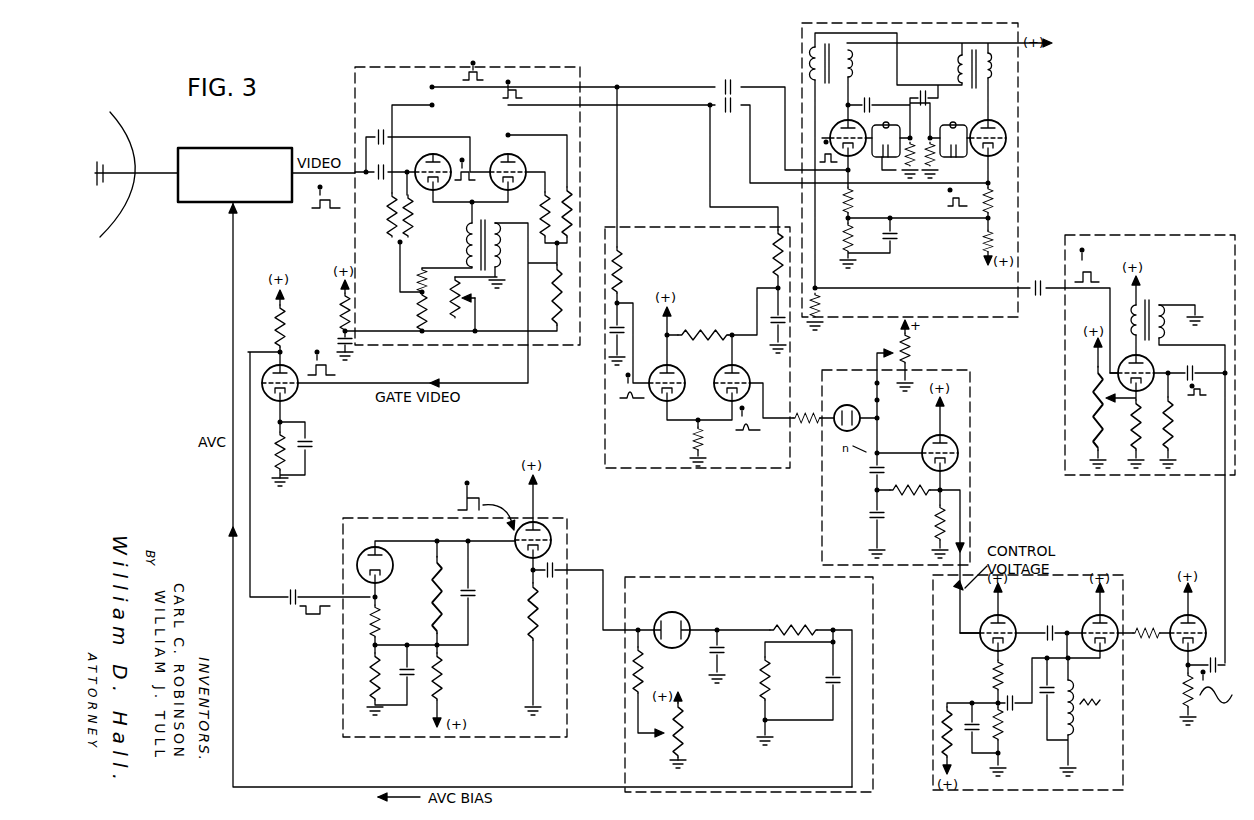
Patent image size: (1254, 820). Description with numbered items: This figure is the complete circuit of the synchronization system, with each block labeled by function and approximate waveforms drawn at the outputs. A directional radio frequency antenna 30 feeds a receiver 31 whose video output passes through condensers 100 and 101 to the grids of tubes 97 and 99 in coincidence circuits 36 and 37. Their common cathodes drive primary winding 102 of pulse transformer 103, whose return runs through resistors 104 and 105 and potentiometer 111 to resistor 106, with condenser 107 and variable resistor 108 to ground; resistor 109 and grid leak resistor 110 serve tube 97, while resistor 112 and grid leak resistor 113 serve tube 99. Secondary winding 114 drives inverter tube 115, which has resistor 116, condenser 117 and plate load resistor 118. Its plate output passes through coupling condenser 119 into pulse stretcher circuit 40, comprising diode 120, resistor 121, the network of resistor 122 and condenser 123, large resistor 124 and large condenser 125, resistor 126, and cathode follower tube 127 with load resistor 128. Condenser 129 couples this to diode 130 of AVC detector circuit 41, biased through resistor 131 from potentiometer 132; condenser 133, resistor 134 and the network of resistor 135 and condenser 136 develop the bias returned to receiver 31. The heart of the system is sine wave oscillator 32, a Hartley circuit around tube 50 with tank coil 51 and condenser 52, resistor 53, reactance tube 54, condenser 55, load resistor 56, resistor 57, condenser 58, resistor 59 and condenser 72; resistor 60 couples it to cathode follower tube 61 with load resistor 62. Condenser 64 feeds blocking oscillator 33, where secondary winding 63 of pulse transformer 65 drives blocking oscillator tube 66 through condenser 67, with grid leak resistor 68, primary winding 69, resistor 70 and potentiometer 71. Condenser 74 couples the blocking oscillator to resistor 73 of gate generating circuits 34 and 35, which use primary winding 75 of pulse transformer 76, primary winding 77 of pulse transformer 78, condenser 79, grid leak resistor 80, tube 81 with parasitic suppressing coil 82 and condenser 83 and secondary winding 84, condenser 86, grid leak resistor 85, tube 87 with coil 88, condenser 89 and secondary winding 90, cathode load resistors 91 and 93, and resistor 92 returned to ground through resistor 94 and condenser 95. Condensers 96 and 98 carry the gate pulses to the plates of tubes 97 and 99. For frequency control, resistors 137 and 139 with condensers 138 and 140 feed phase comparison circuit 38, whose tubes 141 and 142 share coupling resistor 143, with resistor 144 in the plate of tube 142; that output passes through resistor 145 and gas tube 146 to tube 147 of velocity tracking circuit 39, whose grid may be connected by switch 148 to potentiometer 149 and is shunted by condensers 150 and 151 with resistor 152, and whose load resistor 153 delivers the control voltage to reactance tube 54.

The directional radio frequency antenna 30 is at (124, 141).
The receiver 31 is at (244, 148).
The sine wave oscillator 32 is at (1124, 712).
The blocking oscillator 33 is at (1060, 390).
The gate generating circuit 34 is at (983, 170).
The gate generating circuit 35 is at (1023, 126).
The coincidence circuit 36 is at (481, 192).
The coincidence circuit 37 is at (481, 192).
The phase comparison circuit 38 is at (600, 437).
The velocity tracking circuit 39 is at (973, 445).
The pulse stretcher circuit 40 is at (338, 700).
The AVC detector circuit 41 is at (623, 719).
The tube 50 is at (1095, 621).
The coil 51 is at (1072, 686).
The condenser 52 is at (1035, 704).
The resistor 53 is at (1087, 710).
The reactance tube 54 is at (1002, 621).
The condenser 55 is at (1048, 629).
The load resistor 56 is at (993, 665).
The resistor 57 is at (1003, 738).
The condenser 58 is at (972, 740).
The resistor 59 is at (938, 722).
The resistor 60 is at (1146, 623).
The cathode follower tube 61 is at (1194, 620).
The load resistor 62 is at (1180, 685).
The secondary winding 63 is at (1162, 330).
The condenser 64 is at (1213, 652).
The pulse transformer 65 is at (1143, 308).
The blocking oscillator tube 66 is at (1128, 365).
The condenser 67 is at (1190, 370).
The grid leak resistor 68 is at (1173, 413).
The primary winding 69 is at (1135, 305).
The resistor 70 is at (1133, 413).
The potentiometer 71 is at (1090, 400).
The condenser 72 is at (1012, 698).
The resistor 73 is at (821, 301).
The condenser 74 is at (1040, 293).
The primary winding 75 is at (808, 70).
The pulse transformer 76 is at (815, 45).
The primary winding 77 is at (963, 55).
The pulse transformer 78 is at (975, 53).
The condenser 79 is at (923, 96).
The grid leak resistor 80 is at (924, 195).
The tube 81 is at (845, 124).
The coil 82 is at (887, 130).
The condenser 83 is at (883, 159).
The secondary winding 84 is at (850, 52).
The grid leak resistor 85 is at (934, 169).
The condenser 86 is at (868, 98).
The tube 87 is at (989, 121).
The coil 88 is at (953, 127).
The condenser 89 is at (958, 159).
The secondary winding 90 is at (989, 53).
The cathode load resistor 91 is at (991, 197).
The resistor 92 is at (991, 239).
The cathode load resistor 93 is at (848, 199).
The resistor 94 is at (848, 234).
The condenser 95 is at (893, 240).
The condenser 96 is at (732, 87).
The tube 97 is at (427, 158).
The condenser 98 is at (718, 103).
The tube 99 is at (506, 158).
The condenser 100 is at (379, 177).
The condenser 101 is at (377, 133).
The primary winding 102 is at (462, 232).
The pulse transformer 103 is at (488, 236).
The resistor 104 is at (415, 285).
The resistor 105 is at (417, 317).
The resistor 106 is at (342, 300).
The condenser 107 is at (342, 340).
The variable resistor 108 is at (449, 297).
The resistor 109 is at (389, 226).
The grid leak resistor 110 is at (412, 210).
The potentiometer 111 is at (573, 292).
The resistor 112 is at (573, 206).
The grid leak resistor 113 is at (545, 205).
The secondary winding 114 is at (498, 252).
The inverter tube 115 is at (300, 389).
The resistor 116 is at (279, 439).
The condenser 117 is at (315, 442).
The plate load resistor 118 is at (283, 314).
The coupling condenser 119 is at (299, 593).
The diode 120 is at (394, 568).
The resistor 121 is at (380, 620).
The resistor 122 is at (372, 665).
The condenser 123 is at (410, 680).
The large resistor 124 is at (438, 614).
The large condenser 125 is at (470, 610).
The resistor 126 is at (445, 677).
The cathode follower tube 127 is at (544, 517).
The load resistor 128 is at (535, 616).
The condenser 129 is at (559, 564).
The diode 130 is at (667, 608).
The resistor 131 is at (642, 667).
The potentiometer 132 is at (680, 718).
The condenser 133 is at (719, 655).
The resistor 134 is at (815, 615).
The resistor 135 is at (767, 680).
The condenser 136 is at (830, 688).
The resistor 137 is at (624, 258).
The condenser 138 is at (614, 334).
The resistor 139 is at (774, 260).
The condenser 140 is at (773, 316).
The tube 141 is at (665, 370).
The tube 142 is at (733, 370).
The coupling resistor 143 is at (690, 436).
The resistor 144 is at (699, 330).
The resistor 145 is at (807, 431).
The gas tube 146 is at (835, 410).
The tube 147 is at (945, 438).
The switch 148 is at (874, 400).
The potentiometer 149 is at (894, 348).
The condenser 150 is at (873, 470).
The condenser 151 is at (873, 518).
The resistor 152 is at (910, 481).
The load resistor 153 is at (931, 530).